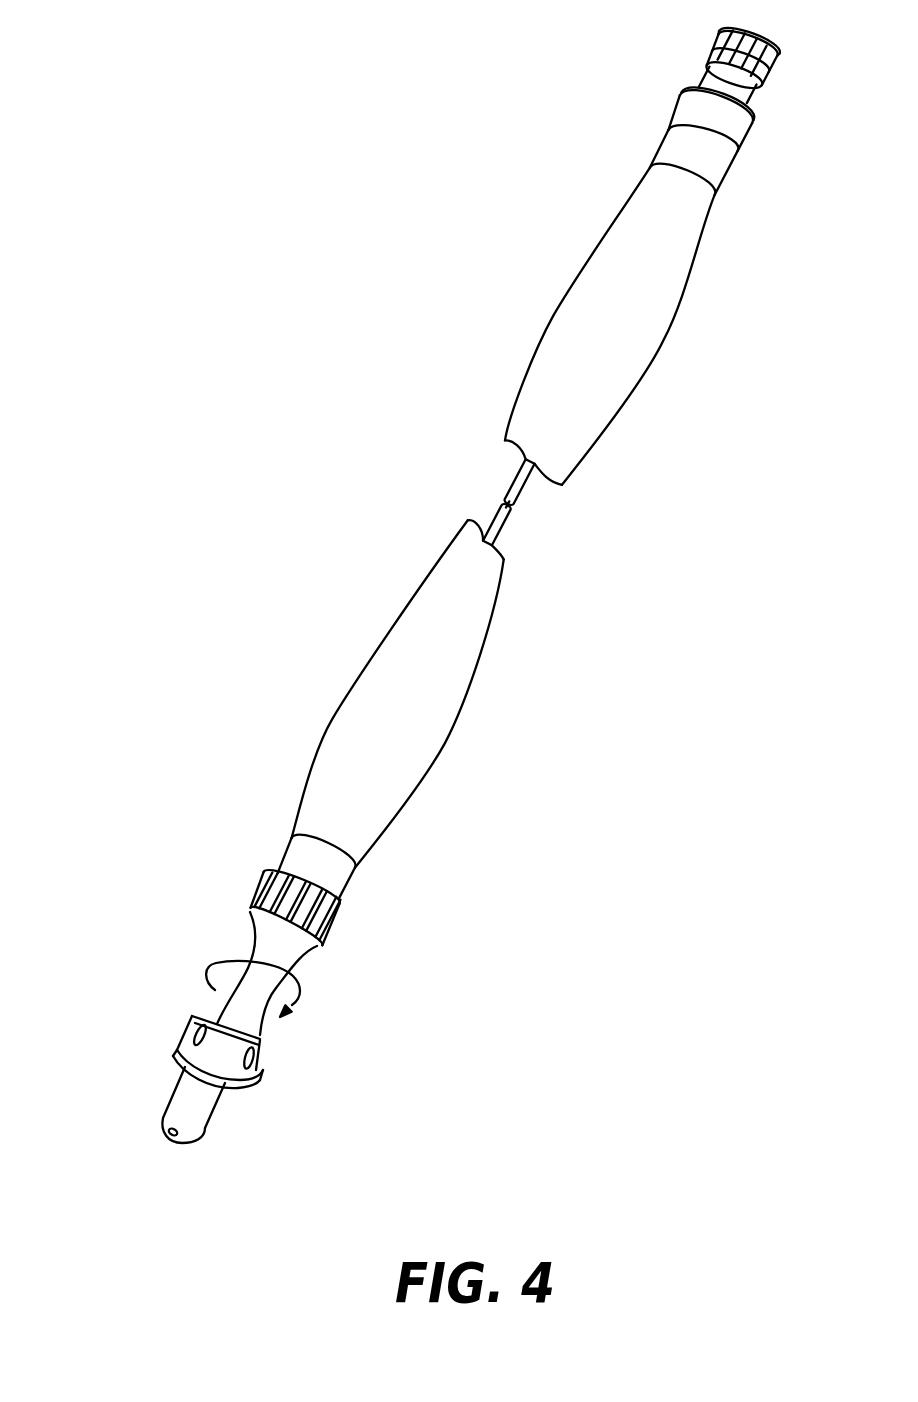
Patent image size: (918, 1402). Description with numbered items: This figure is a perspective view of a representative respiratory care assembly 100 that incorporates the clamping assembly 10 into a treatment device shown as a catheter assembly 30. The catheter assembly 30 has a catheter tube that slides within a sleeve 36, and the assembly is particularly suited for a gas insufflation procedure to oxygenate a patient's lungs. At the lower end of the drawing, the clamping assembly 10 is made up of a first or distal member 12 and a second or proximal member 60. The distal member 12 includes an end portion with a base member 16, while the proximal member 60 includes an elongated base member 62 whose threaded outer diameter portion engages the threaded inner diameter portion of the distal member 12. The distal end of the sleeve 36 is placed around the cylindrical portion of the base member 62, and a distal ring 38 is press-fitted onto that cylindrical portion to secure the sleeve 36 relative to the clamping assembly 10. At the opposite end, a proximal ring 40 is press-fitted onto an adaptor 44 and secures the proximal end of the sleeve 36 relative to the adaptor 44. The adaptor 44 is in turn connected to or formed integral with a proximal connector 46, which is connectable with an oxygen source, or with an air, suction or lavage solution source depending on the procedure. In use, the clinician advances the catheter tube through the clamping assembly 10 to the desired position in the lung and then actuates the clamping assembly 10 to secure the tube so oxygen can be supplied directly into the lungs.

The respiratory care assembly 100 is at (428, 580).
The catheter assembly 30 is at (529, 449).
The sleeve 36 is at (548, 385).
The proximal ring 40 is at (687, 157).
The adaptor 44 is at (687, 115).
The proximal connector 46 is at (705, 83).
The proximal member 60 is at (301, 928).
The distal ring 38 is at (333, 875).
The elongated base member 62 is at (283, 948).
The clamping assembly 10 is at (170, 1021).
The distal member 12 is at (118, 1082).
The base member 16 is at (217, 1115).